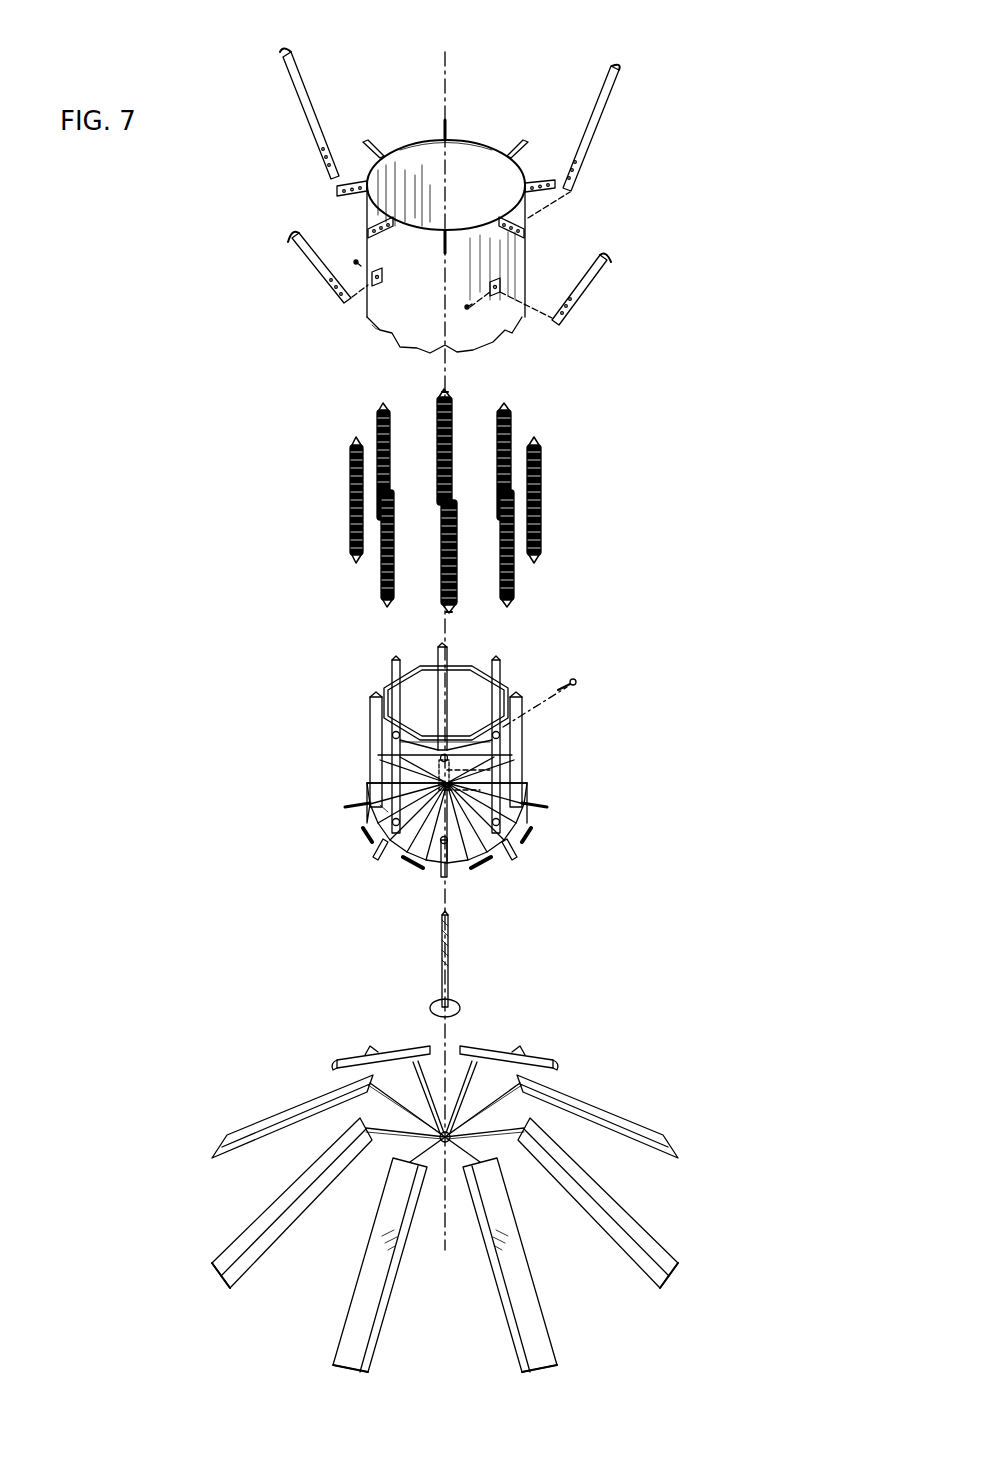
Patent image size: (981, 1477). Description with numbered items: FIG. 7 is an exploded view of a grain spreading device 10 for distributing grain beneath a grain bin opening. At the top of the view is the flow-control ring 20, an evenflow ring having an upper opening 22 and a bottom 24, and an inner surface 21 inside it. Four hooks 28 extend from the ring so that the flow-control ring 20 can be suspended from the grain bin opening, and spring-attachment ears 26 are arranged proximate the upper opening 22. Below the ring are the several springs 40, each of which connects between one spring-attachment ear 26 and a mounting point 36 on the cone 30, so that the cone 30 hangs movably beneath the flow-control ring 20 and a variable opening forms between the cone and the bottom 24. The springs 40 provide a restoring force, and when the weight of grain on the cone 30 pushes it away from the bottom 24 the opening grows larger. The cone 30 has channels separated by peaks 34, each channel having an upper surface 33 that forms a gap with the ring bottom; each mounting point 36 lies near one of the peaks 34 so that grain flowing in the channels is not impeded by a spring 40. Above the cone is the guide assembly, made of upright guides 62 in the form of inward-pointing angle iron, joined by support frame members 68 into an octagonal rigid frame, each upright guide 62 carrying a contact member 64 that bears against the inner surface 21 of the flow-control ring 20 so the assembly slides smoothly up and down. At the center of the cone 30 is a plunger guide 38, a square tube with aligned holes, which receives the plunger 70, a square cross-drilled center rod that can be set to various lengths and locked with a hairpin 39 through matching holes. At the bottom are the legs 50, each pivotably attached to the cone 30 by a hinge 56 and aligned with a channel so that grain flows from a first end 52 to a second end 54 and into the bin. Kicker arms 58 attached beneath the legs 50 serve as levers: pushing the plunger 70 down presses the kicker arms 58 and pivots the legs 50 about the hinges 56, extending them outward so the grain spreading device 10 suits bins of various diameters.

The grain spreading device 10 is at (708, 46).
The flow-control ring 20 is at (420, 140).
The inner surface 21 is at (410, 153).
The upper opening 22 is at (477, 142).
The bottom 24 is at (364, 328).
The spring-attachment ear 26 is at (533, 182).
The hook 28 is at (305, 125).
The cone 30 is at (466, 737).
The upper surface 33 is at (378, 812).
The peak 34 is at (525, 860).
The mounting point 36 is at (372, 852).
The plunger guide 38 is at (495, 772).
The hairpin 39 is at (583, 680).
The spring 40 is at (380, 534).
The leg 50 is at (228, 1145).
The first end 52 is at (347, 1118).
The second end 54 is at (200, 1282).
The hinge 56 is at (532, 848).
The kicker arm 58 is at (400, 1063).
The upright guide 62 is at (370, 705).
The contact member 64 is at (392, 735).
The support frame member 68 is at (473, 663).
The plunger 70 is at (450, 970).